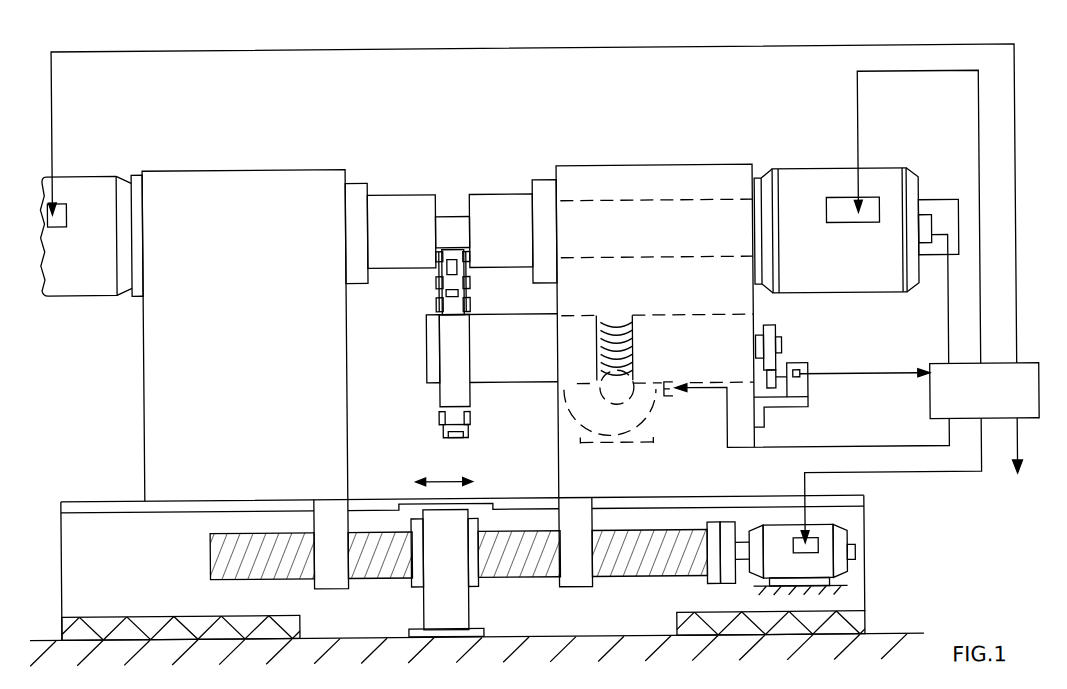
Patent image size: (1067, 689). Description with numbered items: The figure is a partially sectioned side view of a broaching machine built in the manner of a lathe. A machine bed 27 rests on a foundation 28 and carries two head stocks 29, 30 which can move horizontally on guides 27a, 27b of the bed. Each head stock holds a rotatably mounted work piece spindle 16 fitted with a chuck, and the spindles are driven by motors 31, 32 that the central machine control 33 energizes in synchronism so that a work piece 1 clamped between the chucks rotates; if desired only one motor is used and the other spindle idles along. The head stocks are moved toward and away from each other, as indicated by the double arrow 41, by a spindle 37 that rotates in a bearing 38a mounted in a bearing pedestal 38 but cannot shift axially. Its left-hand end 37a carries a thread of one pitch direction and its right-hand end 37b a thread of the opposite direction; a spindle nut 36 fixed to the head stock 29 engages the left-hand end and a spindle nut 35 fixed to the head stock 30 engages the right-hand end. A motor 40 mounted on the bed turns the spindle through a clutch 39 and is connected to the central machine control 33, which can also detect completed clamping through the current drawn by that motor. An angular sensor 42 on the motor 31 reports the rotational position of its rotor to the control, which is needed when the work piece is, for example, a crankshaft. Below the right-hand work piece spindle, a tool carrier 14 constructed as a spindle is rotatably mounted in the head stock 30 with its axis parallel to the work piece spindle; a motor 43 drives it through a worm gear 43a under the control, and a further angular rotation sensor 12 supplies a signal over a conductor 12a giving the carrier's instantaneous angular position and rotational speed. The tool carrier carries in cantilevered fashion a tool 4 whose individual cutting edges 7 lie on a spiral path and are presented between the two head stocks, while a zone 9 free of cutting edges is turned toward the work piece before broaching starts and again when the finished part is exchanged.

The work piece 1 is at (488, 207).
The tool 4 is at (447, 283).
The tool cutting edges 7 is at (472, 303).
The zone free of tool cutting edges 9 is at (445, 394).
The angular rotation sensor 12 is at (790, 368).
The conductor 12a is at (843, 375).
The tool carrier 14 is at (500, 360).
The work piece spindle 16 is at (354, 189).
The machine bed 27 is at (477, 564).
The guide 27a is at (116, 504).
The guide 27b is at (773, 504).
The foundation 28 is at (866, 636).
The head stock 29 is at (213, 182).
The head stock 30 is at (638, 183).
The motor 31 is at (809, 181).
The motor 32 is at (81, 184).
The central machine control 33 is at (986, 407).
The spindle nut 35 is at (578, 578).
The spindle nut 36 is at (333, 561).
The spindle 37 is at (416, 565).
The left-hand end of the spindle 37a is at (221, 546).
The right-hand end of the spindle 37b is at (638, 561).
The bearing pedestal 38 is at (462, 609).
The bearing 38a is at (418, 553).
The clutch 39 is at (713, 577).
The motor 40 is at (842, 544).
The double arrow 41 is at (440, 478).
The angular sensor 42 is at (947, 211).
The motor 43 is at (658, 409).
The worm gear 43a is at (613, 392).